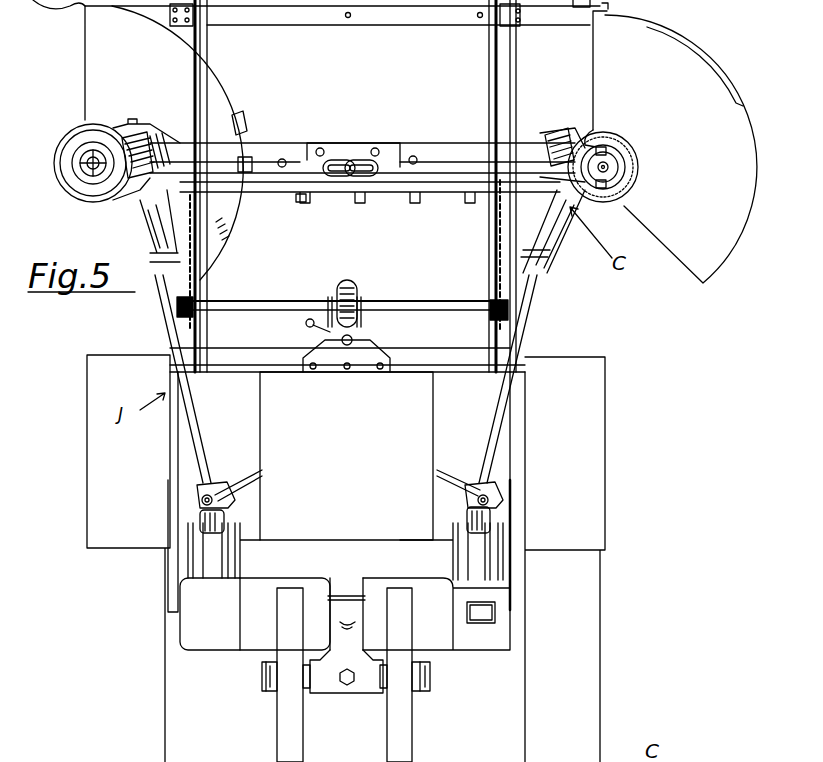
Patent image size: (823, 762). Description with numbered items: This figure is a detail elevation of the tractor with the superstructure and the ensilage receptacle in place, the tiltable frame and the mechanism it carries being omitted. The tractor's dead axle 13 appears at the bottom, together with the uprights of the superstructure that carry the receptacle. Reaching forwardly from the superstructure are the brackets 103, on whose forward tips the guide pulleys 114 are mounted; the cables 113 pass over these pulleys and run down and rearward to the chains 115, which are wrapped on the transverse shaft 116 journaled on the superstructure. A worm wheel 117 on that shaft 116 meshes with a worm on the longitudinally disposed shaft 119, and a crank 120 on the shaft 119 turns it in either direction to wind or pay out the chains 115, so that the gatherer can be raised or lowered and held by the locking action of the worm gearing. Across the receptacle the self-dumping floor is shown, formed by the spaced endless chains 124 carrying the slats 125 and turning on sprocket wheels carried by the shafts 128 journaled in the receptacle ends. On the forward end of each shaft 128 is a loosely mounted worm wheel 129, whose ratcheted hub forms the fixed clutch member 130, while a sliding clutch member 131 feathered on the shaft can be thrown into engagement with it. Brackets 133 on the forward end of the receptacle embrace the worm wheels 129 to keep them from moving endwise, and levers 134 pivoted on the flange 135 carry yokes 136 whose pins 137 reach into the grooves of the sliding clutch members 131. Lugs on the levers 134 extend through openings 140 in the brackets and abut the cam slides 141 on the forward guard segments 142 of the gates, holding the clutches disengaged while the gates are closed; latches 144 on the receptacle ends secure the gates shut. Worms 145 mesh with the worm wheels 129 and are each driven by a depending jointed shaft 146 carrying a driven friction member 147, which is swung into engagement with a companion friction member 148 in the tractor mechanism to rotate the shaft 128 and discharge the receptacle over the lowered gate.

The dead axle 13 is at (520, 590).
The brackets 103 is at (208, 78).
The cables 113 is at (200, 121).
The guide pulleys 114 is at (185, 30).
The chains 115 is at (200, 275).
The transverse shaft 116 is at (402, 308).
The worm wheel 117 is at (350, 280).
The longitudinally disposed shaft 119 is at (355, 340).
The crank 120 is at (306, 326).
The endless chains 124 is at (380, 195).
The slats 125 is at (302, 203).
The shafts 128 is at (78, 172).
The worm wheel 129 is at (65, 130).
The fixed clutch member 130 is at (85, 188).
The sliding clutch member 131 is at (612, 167).
The brackets 133 is at (258, 148).
The levers 134 is at (400, 160).
The flange 135 is at (348, 165).
The yokes 136 is at (590, 140).
The pins 137 is at (600, 148).
The openings 140 is at (246, 173).
The cam slides 141 is at (240, 123).
The guard segments 142 is at (97, 47).
The latches 144 is at (80, 8).
The worms 145 is at (148, 125).
The jointed shaft 146 is at (500, 428).
The driven friction member 147 is at (222, 510).
The friction member 148 is at (225, 552).